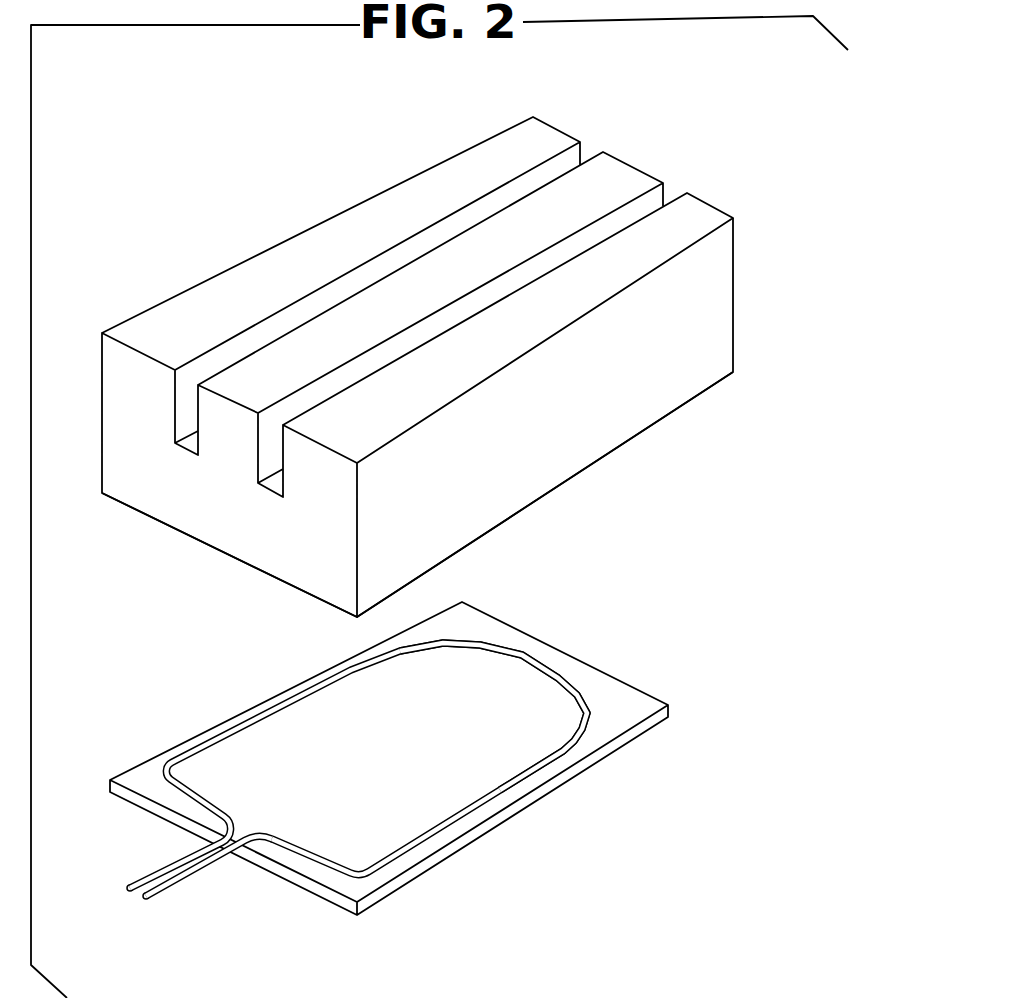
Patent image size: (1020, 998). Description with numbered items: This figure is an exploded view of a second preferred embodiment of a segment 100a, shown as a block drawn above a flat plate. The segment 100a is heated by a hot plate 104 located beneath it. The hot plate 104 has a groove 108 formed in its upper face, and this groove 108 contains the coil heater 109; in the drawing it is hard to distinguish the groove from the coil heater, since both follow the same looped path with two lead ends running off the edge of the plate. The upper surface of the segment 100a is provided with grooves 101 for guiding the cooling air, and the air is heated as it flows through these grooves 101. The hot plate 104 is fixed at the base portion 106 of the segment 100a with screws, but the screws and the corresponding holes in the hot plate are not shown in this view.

The segment 100a is at (668, 393).
The grooves 101 is at (671, 197).
The base portion 106 is at (188, 540).
The hot plate 104 is at (602, 758).
The groove 108 is at (414, 737).
The coil heater 109 is at (586, 693).